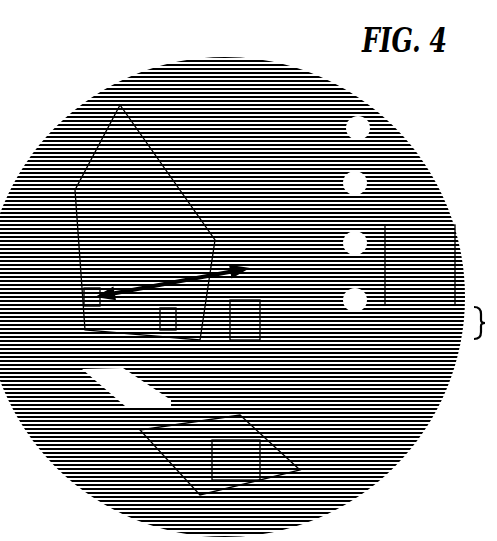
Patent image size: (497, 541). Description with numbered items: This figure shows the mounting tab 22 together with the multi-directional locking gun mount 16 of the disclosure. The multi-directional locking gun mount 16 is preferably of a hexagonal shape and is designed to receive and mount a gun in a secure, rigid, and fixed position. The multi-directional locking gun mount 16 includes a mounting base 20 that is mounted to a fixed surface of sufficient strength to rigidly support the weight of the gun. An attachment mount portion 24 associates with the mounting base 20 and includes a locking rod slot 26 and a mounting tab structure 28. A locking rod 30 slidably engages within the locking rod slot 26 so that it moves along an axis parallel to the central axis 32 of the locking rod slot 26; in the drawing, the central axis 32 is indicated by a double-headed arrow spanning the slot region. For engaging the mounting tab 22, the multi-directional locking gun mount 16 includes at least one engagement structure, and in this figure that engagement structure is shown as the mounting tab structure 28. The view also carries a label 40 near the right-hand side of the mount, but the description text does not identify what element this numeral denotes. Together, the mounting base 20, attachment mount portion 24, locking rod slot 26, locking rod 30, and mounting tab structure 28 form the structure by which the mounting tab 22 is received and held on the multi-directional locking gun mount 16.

The multi-directional locking gun mount 16 is at (92, 148).
The mounting base 20 is at (143, 433).
The mounting tab 22 is at (236, 460).
The attachment mount portion 24 is at (142, 397).
The locking rod slot 26 is at (105, 273).
The mounting tab structure 28 is at (182, 322).
The locking rod 30 is at (250, 290).
The central axis 32 is at (172, 282).
The light emitting diodes 40 is at (436, 308).